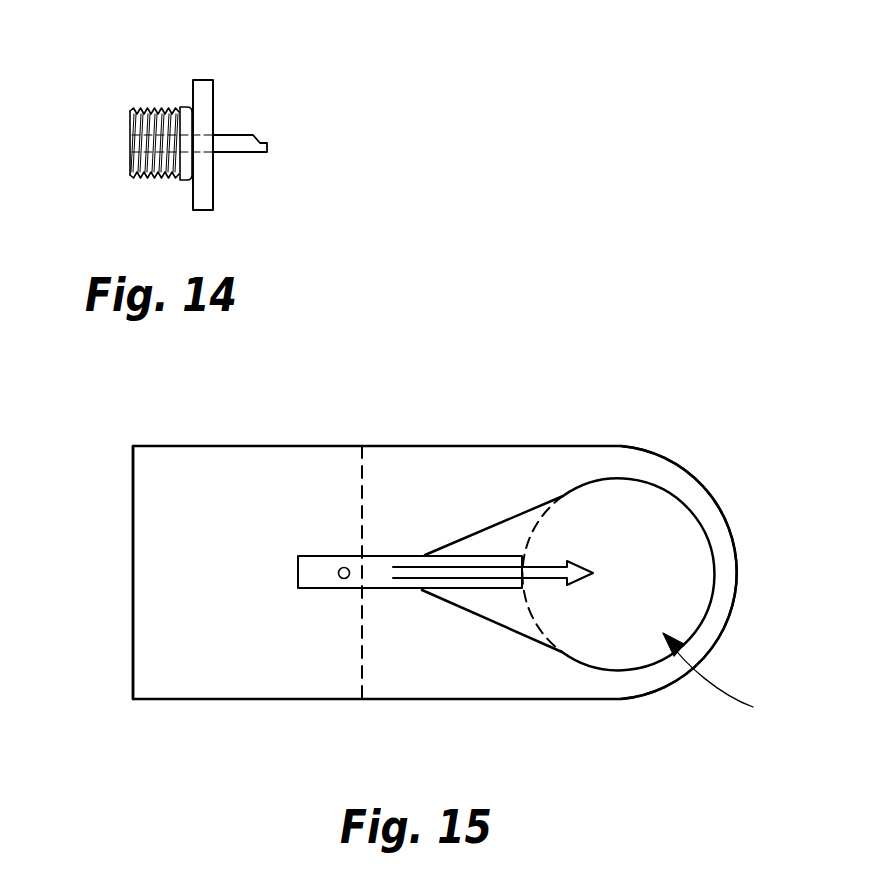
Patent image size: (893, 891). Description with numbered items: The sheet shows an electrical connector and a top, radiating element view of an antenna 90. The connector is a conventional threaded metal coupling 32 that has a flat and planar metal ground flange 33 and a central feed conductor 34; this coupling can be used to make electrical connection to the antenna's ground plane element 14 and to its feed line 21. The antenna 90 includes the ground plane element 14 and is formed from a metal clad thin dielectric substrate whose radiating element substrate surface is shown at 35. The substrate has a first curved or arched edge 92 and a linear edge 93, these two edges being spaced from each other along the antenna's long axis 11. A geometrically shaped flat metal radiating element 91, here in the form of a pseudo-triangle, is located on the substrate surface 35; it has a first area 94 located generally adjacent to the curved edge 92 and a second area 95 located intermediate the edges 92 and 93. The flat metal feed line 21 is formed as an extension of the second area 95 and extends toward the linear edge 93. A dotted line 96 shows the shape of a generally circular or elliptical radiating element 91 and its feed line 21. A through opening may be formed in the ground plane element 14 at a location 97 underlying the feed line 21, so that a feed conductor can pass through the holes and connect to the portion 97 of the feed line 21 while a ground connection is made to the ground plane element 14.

In FIG. 14, the threaded metal coupling 32 is at (220, 109).
In FIG. 14, the metal ground flange 33 is at (203, 95).
In FIG. 14, the central feed conductor 34 is at (255, 135).
In FIG. 15, the antenna 90 is at (444, 530).
In FIG. 15, the radiating element substrate surface 35 is at (405, 472).
In FIG. 15, the linear edge 93 is at (133, 577).
In FIG. 15, the curved or arched edge 92 is at (737, 618).
In FIG. 15, the radiating element 91 is at (700, 520).
In FIG. 15, the dotted line 96 is at (530, 613).
In FIG. 15, the second area 95 is at (511, 606).
In FIG. 15, the feed line 21 is at (312, 567).
In FIG. 15, the through opening location 97 is at (340, 580).
In FIG. 15, the long axis 11 is at (538, 567).
In FIG. 15, the first area 94 is at (731, 683).
In FIG. 15, the ground plane element 14 is at (188, 668).